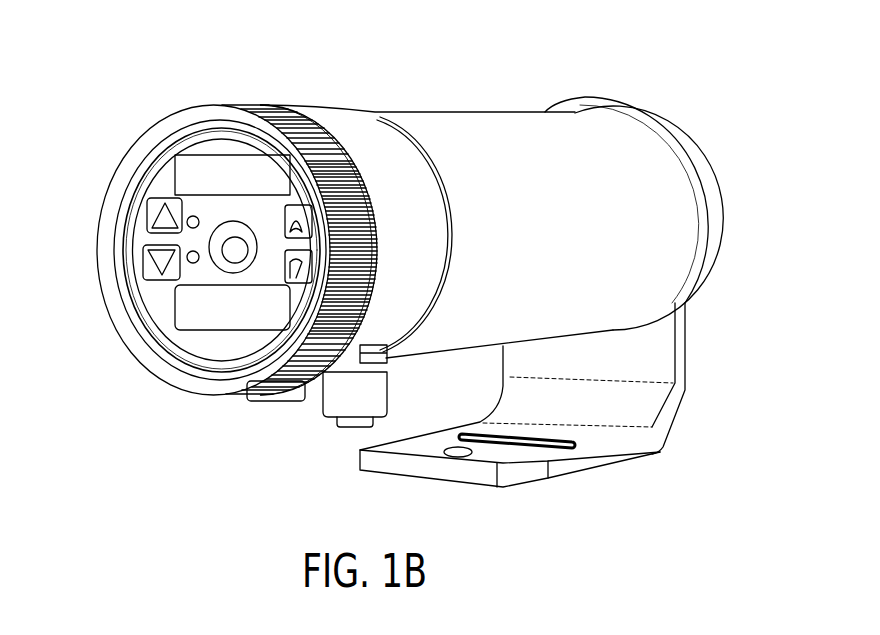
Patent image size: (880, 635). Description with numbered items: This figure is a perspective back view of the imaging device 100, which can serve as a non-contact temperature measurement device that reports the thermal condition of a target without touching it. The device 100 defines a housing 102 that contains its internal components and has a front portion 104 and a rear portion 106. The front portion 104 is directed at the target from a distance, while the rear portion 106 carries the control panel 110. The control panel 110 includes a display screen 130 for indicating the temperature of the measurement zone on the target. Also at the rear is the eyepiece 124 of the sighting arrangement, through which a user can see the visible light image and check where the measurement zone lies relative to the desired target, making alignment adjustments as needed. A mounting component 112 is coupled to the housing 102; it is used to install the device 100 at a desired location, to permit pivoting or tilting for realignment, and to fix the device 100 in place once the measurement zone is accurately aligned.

The imaging device 100 is at (424, 253).
The housing 102 is at (432, 126).
The front portion 104 is at (585, 96).
The rear portion 106 is at (272, 102).
The control panel 110 is at (181, 338).
The mounting component 112 is at (607, 457).
The eyepiece 124 is at (243, 268).
The display screen 130 is at (176, 188).